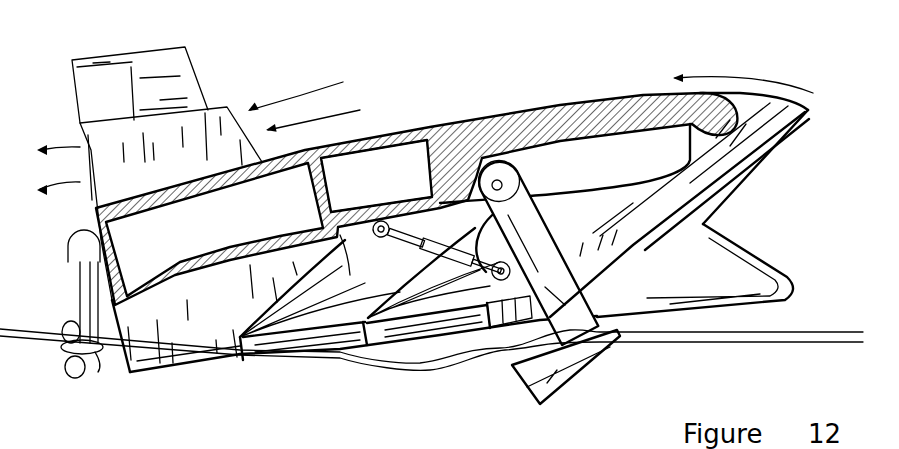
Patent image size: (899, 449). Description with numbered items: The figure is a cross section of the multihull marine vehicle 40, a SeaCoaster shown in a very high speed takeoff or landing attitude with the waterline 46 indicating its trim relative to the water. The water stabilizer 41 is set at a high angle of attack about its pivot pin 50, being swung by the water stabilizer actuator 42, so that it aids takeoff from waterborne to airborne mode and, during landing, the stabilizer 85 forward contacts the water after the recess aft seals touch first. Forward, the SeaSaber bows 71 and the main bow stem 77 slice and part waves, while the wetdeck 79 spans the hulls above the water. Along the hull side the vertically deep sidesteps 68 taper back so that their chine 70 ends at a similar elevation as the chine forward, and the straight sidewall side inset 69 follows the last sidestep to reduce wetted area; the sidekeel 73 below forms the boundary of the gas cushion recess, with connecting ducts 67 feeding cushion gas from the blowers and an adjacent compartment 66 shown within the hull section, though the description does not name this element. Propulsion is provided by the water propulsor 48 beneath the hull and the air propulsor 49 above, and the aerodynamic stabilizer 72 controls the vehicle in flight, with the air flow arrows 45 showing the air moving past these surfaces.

The multihull marine vehicle 40 is at (463, 118).
The water stabilizer 41 is at (573, 300).
The water stabilizer actuator 42 is at (533, 217).
The air flow arrows 45 is at (287, 95).
The waterline 46 is at (790, 332).
The water propulsor 48 is at (94, 368).
The air propulsor 49 is at (167, 147).
The pivot pin 50 is at (499, 182).
The compartment 66 is at (659, 163).
The connecting ducts 67 is at (380, 187).
The sidesteps 68 is at (443, 325).
The sidewall side inset 69 is at (239, 315).
The chine 70 is at (323, 228).
The SeaSaber bows 71 is at (753, 270).
The aerodynamic stabilizer 72 is at (182, 77).
The sidekeel 73 is at (191, 370).
The main bow stem 77 is at (750, 177).
The wetdeck 79 is at (710, 140).
The landing hull member 85 is at (540, 393).